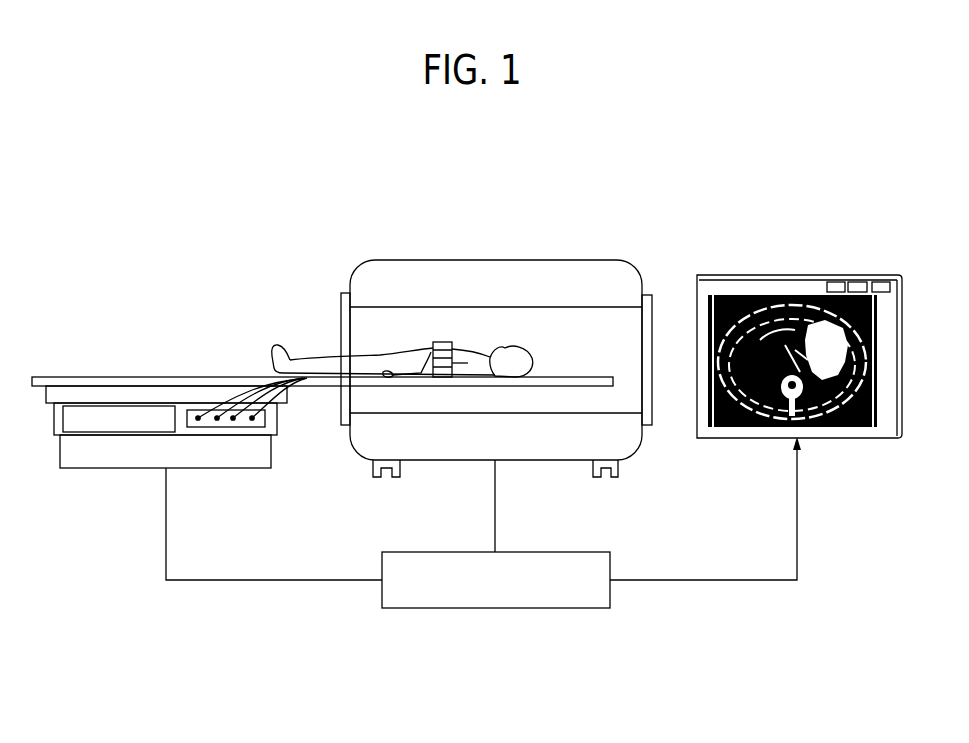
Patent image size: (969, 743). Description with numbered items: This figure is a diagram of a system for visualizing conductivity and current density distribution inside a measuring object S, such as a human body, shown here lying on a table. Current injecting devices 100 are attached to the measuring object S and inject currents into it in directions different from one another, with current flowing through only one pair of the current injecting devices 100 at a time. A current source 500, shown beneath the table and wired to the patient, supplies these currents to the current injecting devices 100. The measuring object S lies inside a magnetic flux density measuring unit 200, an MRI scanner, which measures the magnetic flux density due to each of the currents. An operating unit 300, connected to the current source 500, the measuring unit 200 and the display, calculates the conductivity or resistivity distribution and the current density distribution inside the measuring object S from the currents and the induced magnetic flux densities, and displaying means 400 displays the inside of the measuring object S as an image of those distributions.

The current injecting devices 100 is at (442, 343).
The magnetic flux density measuring unit 200 is at (580, 267).
The operating unit 300 is at (578, 553).
The displaying means 400 is at (785, 283).
The current source 500 is at (106, 380).
The measuring object S is at (307, 363).